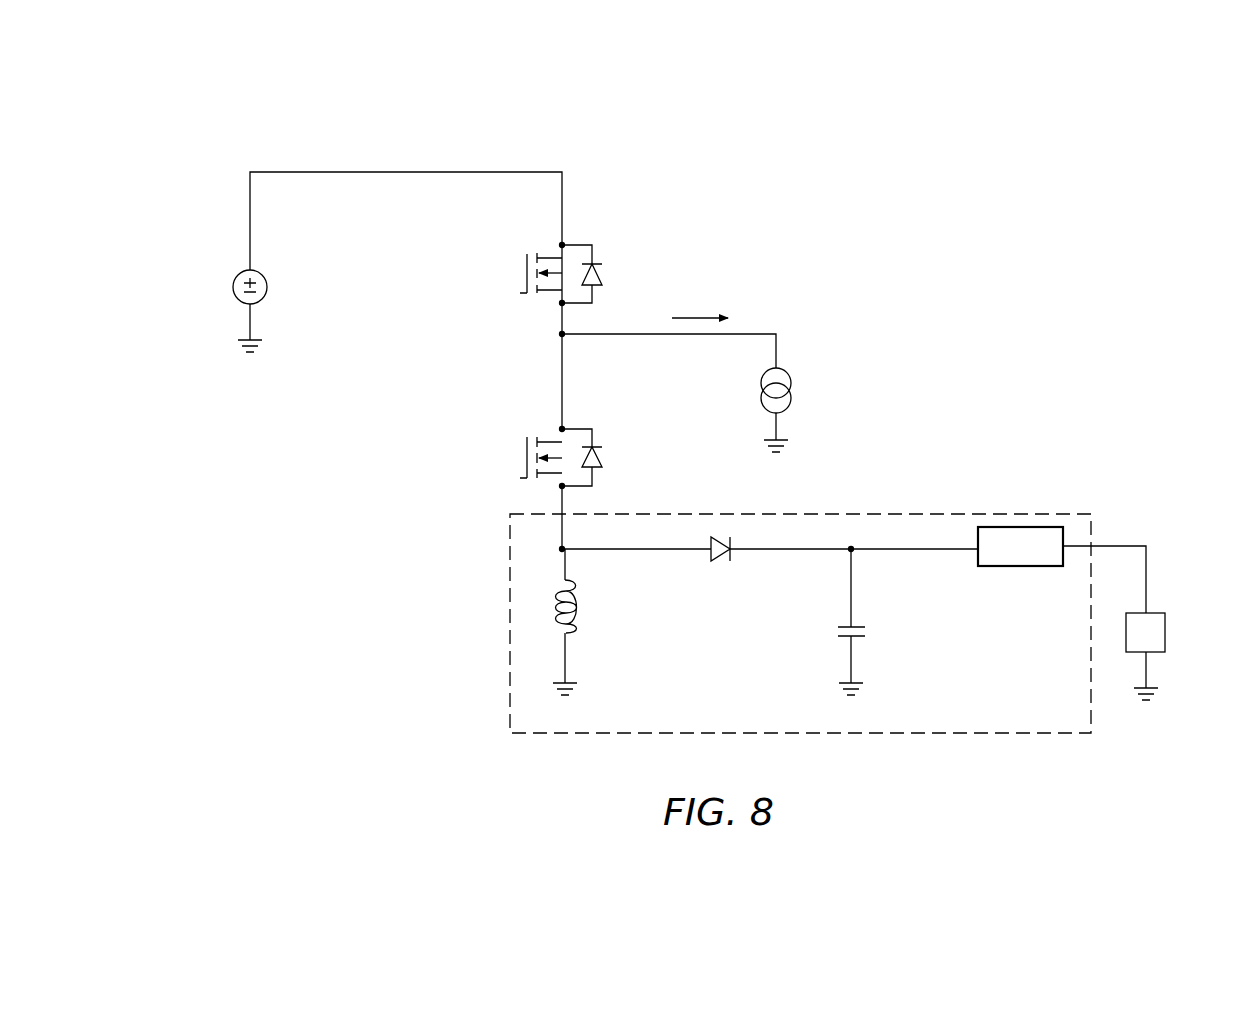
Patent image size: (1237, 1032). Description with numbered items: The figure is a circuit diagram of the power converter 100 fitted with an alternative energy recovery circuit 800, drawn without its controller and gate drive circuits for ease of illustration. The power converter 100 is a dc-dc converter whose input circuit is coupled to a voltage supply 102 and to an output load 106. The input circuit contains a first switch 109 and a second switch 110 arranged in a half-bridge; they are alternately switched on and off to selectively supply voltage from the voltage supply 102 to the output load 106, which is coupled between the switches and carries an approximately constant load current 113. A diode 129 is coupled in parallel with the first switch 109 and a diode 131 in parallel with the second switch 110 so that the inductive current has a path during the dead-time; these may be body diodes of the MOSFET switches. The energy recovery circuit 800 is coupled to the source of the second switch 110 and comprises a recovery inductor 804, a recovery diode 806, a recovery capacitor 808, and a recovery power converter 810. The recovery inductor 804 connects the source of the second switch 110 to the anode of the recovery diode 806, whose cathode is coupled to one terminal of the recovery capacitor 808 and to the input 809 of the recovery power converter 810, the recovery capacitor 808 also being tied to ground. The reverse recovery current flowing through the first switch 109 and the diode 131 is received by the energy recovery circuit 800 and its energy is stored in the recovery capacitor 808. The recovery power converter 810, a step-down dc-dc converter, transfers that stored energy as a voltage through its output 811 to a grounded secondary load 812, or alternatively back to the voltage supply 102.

The power converter 100 is at (929, 180).
The voltage supply 102 is at (240, 273).
The output load 106 is at (792, 386).
The first switch 109 is at (512, 280).
The second switch 110 is at (512, 466).
The load current 113 is at (695, 312).
The diode 129 is at (606, 256).
The diode 131 is at (608, 436).
The energy recovery circuit 800 is at (1038, 512).
The recovery inductor 804 is at (550, 612).
The recovery diode 806 is at (740, 542).
The recovery capacitor 808 is at (826, 637).
The input 809 is at (960, 557).
The recovery power converter 810 is at (1018, 568).
The output 811 is at (1105, 531).
The secondary load 812 is at (1166, 633).